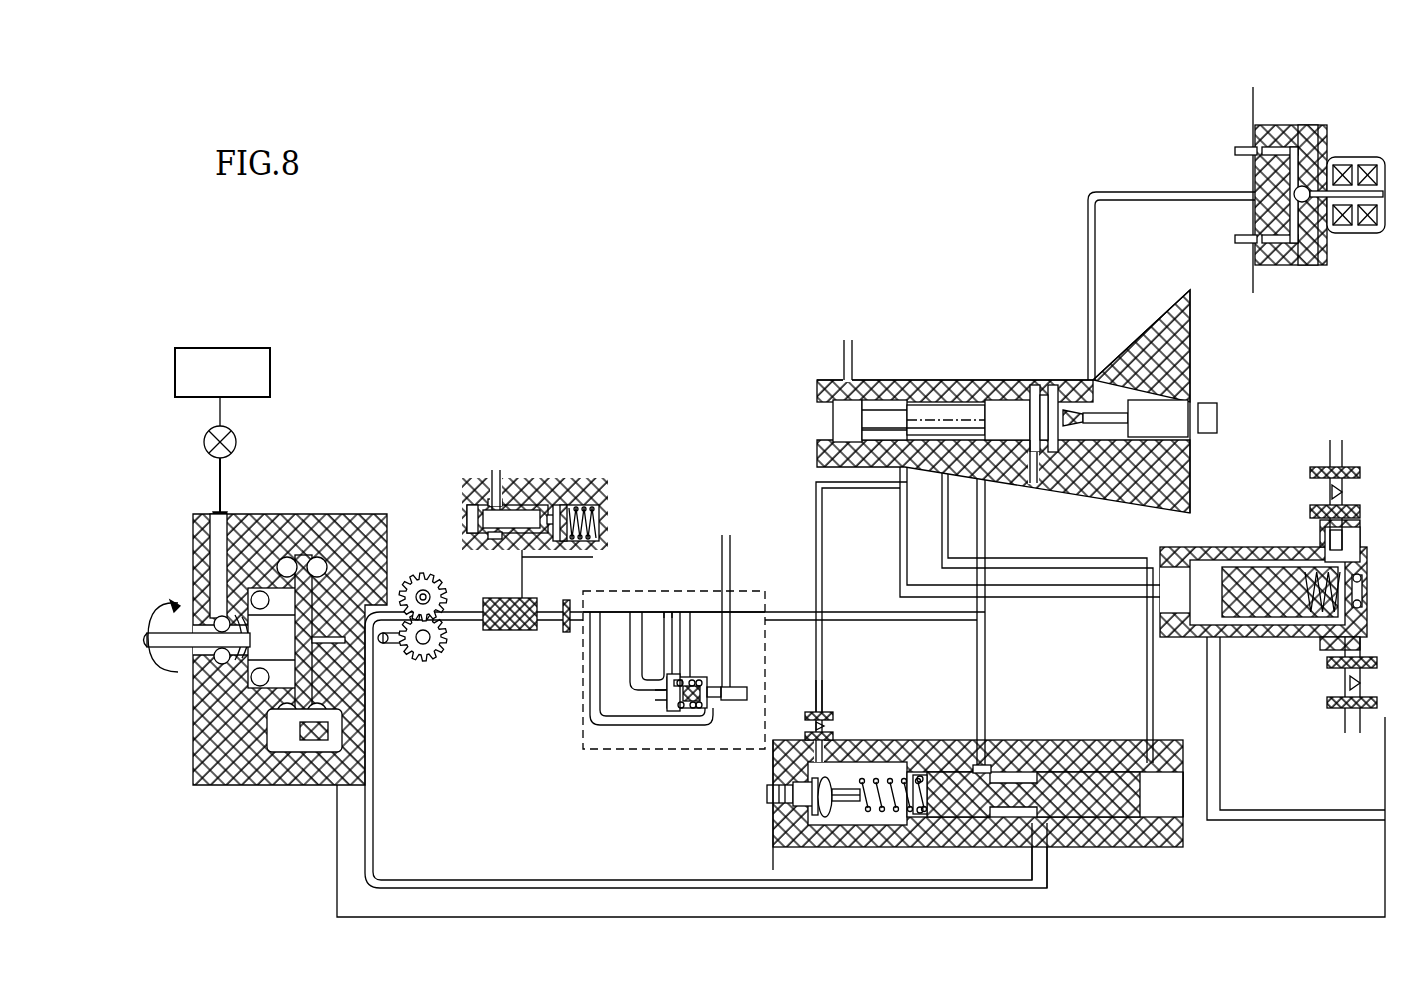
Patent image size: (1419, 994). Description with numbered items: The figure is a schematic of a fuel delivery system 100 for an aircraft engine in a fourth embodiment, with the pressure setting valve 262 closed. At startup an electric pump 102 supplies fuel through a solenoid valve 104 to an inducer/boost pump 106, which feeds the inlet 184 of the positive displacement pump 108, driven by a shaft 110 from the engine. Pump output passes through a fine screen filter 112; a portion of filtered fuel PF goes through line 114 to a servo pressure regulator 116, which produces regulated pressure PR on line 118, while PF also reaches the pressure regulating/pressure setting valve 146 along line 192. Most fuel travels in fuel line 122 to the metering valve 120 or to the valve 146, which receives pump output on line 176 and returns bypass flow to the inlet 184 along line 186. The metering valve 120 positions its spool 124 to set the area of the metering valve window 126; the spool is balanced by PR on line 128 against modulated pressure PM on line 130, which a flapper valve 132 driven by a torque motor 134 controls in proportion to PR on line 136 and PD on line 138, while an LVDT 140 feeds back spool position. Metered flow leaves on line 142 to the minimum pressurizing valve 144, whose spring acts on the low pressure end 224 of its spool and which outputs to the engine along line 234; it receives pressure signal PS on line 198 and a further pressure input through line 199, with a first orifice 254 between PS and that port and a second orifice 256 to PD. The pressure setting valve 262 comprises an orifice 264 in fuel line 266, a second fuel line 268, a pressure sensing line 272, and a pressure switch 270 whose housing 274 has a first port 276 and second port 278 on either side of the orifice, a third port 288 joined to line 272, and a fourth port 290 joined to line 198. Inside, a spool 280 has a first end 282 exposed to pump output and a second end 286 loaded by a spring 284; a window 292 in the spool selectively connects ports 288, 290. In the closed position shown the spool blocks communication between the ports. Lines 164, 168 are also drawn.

The fuel delivery system 100 is at (672, 252).
The electric pump 102 is at (220, 348).
The solenoid valve 104 is at (262, 440).
The inducer/boost pump 106 is at (276, 586).
The positive displacement pump 108 is at (420, 573).
The shaft 110 is at (183, 655).
The fine screen filter 112 is at (491, 630).
The line 114 is at (519, 574).
The servo pressure regulator 116 is at (547, 505).
The line 118 is at (492, 492).
The metering valve 120 is at (795, 360).
The fuel line 122 is at (566, 633).
The spool 124 is at (1010, 404).
The metering valve window 126 is at (932, 438).
The line 128 is at (1040, 484).
The line 130 is at (1088, 227).
The flapper valve 132 is at (1343, 228).
The torque motor 134 is at (1352, 158).
The line 136 is at (1243, 248).
The line 138 is at (1248, 143).
The LVDT 140 is at (1158, 418).
The line 142 is at (900, 548).
The minimum pressurizing valve 144 is at (1232, 575).
The pressure regulating/pressure setting valve 146 is at (906, 738).
The P2 pressure line 164 is at (816, 523).
The P1 pressure line 168 is at (999, 566).
The line 176 is at (975, 700).
The inlet 184 is at (395, 612).
The line 186 is at (1035, 852).
The line 192 is at (558, 559).
The line 198 is at (1330, 462).
The line 199 is at (1362, 542).
The low pressure end 224 is at (1362, 604).
The line 234 is at (1218, 780).
The first orifice 254 is at (1346, 492).
The second orifice 256 is at (1362, 683).
The pressure setting valve 262 is at (586, 764).
The orifice 264 is at (658, 617).
The fuel line 266 is at (641, 611).
The second fuel line 268 is at (635, 642).
The pressure switch 270 is at (670, 712).
The pressure sensing line 272 is at (591, 677).
The housing 274 is at (687, 677).
The first port 276 is at (664, 694).
The second port 278 is at (677, 678).
The spool 280 is at (697, 710).
The first end 282 is at (677, 708).
The spring 284 is at (702, 706).
The second end 286 is at (691, 710).
The third port 288 is at (718, 704).
The fourth port 290 is at (727, 686).
The window 292 is at (699, 684).